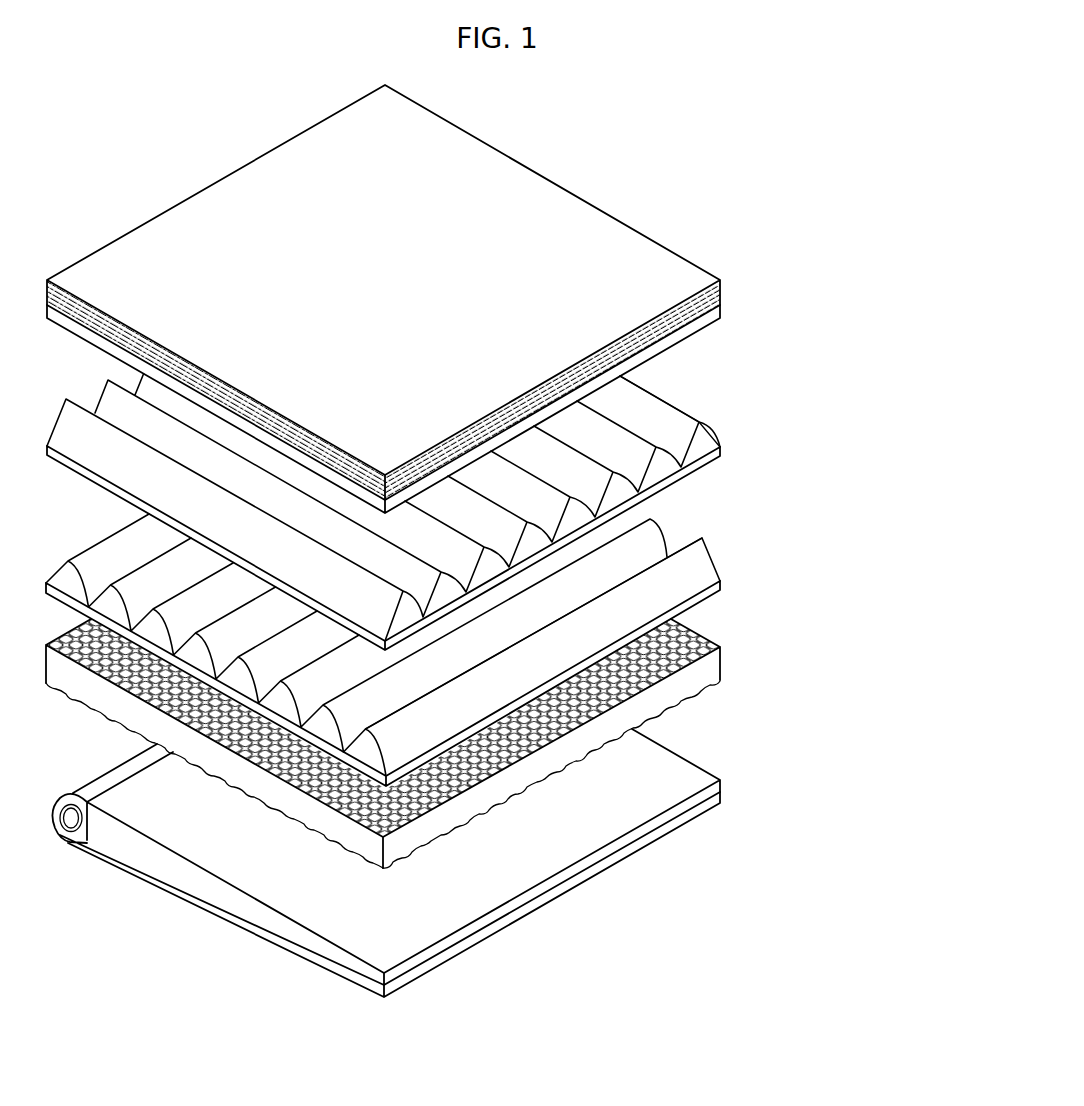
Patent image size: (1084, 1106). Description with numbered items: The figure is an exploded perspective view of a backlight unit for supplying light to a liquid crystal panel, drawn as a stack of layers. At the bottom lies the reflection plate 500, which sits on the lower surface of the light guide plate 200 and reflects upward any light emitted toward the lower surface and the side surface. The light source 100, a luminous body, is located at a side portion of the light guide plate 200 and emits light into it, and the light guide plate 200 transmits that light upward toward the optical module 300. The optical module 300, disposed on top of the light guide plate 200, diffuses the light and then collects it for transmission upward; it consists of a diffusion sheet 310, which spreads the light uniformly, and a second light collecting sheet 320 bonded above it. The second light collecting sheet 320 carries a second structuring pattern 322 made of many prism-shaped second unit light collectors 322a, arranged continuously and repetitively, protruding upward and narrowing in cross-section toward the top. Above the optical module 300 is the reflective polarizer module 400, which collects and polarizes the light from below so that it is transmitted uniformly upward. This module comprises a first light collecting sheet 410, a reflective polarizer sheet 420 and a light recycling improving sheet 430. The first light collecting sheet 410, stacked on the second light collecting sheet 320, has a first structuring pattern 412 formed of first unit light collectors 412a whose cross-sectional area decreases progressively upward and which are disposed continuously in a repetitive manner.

The light source 100 is at (71, 823).
The light guide plate 200 is at (379, 857).
The optical module 300 is at (501, 673).
The diffusion sheet 310 is at (471, 743).
The second light collecting sheet 320 is at (472, 632).
The second structuring pattern 322 is at (683, 521).
The second unit light collector 322a is at (688, 569).
The reflective polarizer module 400 is at (502, 367).
The first light collecting sheet 410 is at (472, 494).
The first structuring pattern 412 is at (672, 397).
The first unit light collector 412a is at (668, 419).
The reflective polarizer sheet 420 is at (727, 293).
The light recycling improving sheet 430 is at (725, 320).
The reflection plate 500 is at (291, 947).